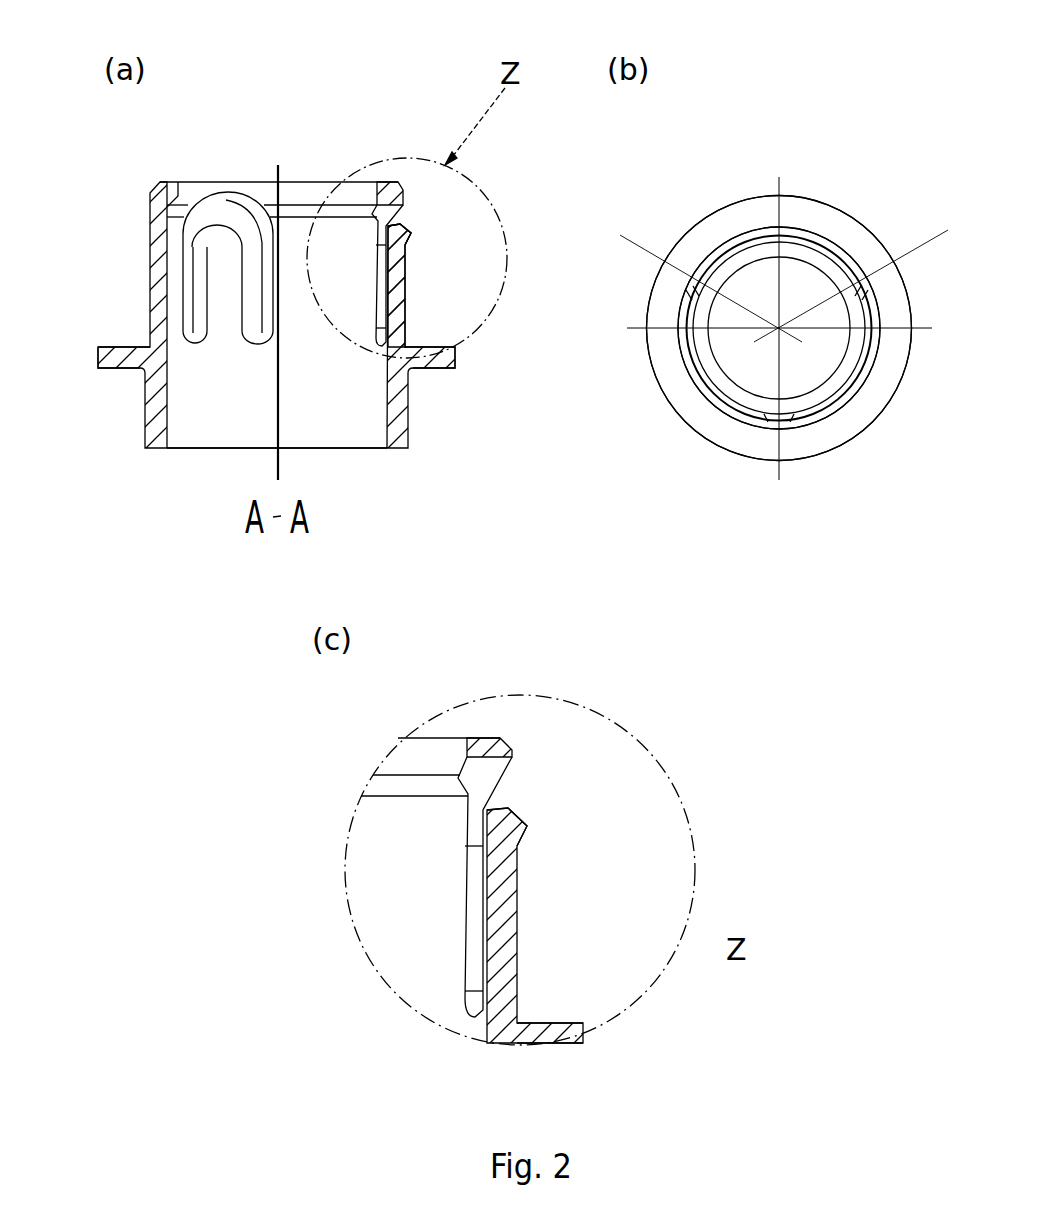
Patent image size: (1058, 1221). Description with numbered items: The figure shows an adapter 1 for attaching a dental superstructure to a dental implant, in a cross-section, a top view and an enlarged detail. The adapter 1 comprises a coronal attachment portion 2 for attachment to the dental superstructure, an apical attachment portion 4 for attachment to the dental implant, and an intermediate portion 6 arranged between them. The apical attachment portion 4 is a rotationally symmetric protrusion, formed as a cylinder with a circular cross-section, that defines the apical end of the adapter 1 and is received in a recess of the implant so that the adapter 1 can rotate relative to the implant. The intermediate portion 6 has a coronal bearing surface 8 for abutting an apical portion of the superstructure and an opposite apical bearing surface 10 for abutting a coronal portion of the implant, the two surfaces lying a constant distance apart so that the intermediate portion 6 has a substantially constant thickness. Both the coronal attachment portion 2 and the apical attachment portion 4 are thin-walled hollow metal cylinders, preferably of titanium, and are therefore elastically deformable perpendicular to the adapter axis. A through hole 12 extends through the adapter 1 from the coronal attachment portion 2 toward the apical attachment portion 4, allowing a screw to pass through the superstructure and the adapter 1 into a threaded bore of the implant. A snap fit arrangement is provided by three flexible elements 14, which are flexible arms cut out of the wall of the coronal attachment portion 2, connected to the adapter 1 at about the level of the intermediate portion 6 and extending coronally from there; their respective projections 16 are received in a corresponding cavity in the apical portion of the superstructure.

The adapter 1 is at (128, 184).
The coronal attachment portion 2 is at (135, 258).
The apical attachment portion 4 is at (132, 405).
The intermediate portion 6 is at (97, 357).
The coronal bearing surface 8 is at (107, 337).
The apical bearing surface 10 is at (415, 368).
The through hole 12 is at (205, 427).
The flexible elements 14 is at (405, 266).
The projections 16 is at (406, 240).